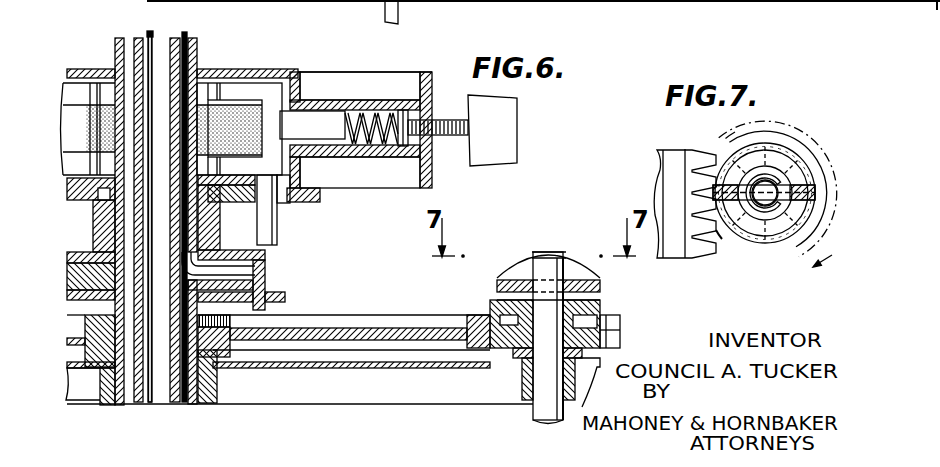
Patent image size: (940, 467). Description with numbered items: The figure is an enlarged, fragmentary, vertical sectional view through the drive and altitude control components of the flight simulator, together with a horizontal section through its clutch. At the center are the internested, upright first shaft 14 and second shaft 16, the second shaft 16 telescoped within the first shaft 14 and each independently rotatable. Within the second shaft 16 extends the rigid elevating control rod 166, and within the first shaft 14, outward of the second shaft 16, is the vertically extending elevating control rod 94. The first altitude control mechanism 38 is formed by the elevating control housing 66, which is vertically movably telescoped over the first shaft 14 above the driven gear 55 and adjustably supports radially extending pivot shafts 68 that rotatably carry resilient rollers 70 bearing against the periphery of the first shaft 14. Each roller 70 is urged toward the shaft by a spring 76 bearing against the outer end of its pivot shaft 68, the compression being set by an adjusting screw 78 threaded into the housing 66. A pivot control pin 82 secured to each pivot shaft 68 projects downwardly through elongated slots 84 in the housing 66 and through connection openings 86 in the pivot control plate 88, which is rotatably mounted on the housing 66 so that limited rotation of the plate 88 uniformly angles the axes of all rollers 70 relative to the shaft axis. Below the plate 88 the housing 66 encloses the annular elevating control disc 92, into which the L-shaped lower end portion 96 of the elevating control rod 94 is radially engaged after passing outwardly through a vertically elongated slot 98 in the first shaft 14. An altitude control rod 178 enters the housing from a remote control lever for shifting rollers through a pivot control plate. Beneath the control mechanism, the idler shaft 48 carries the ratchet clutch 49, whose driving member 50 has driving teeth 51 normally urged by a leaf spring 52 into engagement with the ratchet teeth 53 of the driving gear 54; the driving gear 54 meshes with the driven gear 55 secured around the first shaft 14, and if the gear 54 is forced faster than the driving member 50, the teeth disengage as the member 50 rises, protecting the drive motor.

In FIG. 6, the first shaft 14 is at (113, 50).
In FIG. 6, the second shaft 16 is at (143, 34).
In FIG. 6, the elevating control rod 166 is at (148, 32).
In FIG. 6, the elevating control rod 94 is at (185, 33).
In FIG. 6, the rollers 70 is at (83, 137).
In FIG. 6, the elevating control housing 66 is at (328, 103).
In FIG. 6, the pivot shafts 68 is at (303, 122).
In FIG. 6, the spring 76 is at (372, 115).
In FIG. 6, the adjusting screw 78 is at (453, 118).
In FIG. 6, the altitude control rod 178 is at (399, 11).
In FIG. 6, the elongated slots 84 is at (282, 180).
In FIG. 6, the pivot control plate 88 is at (318, 193).
In FIG. 6, the connection openings 86 is at (283, 208).
In FIG. 6, the vertically elongated slot 98 is at (193, 222).
In FIG. 6, the pivot control pin 82 is at (268, 227).
In FIG. 6, the L-shaped lower end portion 96 is at (232, 271).
In FIG. 6, the elevating control disc 92 is at (250, 283).
In FIG. 6, the driven gear 55 is at (313, 332).
In FIG. 7, the driven gear 55 is at (657, 153).
In FIG. 6, the first altitude control mechanism 38 is at (350, 219).
In FIG. 6, the idler shaft 48 is at (543, 270).
In FIG. 7, the idler shaft 48 is at (765, 206).
In FIG. 6, the ratchet clutch 49 is at (570, 278).
In FIG. 7, the ratchet clutch 49 is at (782, 157).
In FIG. 6, the leaf spring 52 is at (513, 272).
In FIG. 7, the leaf spring 52 is at (798, 180).
In FIG. 6, the driving member 50 is at (590, 287).
In FIG. 7, the driving member 50 is at (765, 148).
In FIG. 6, the driving teeth 51 is at (600, 307).
In FIG. 7, the driving teeth 51 is at (730, 133).
In FIG. 6, the ratchet teeth 53 is at (622, 317).
In FIG. 6, the driving gear 54 is at (600, 333).
In FIG. 7, the driving gear 54 is at (716, 242).